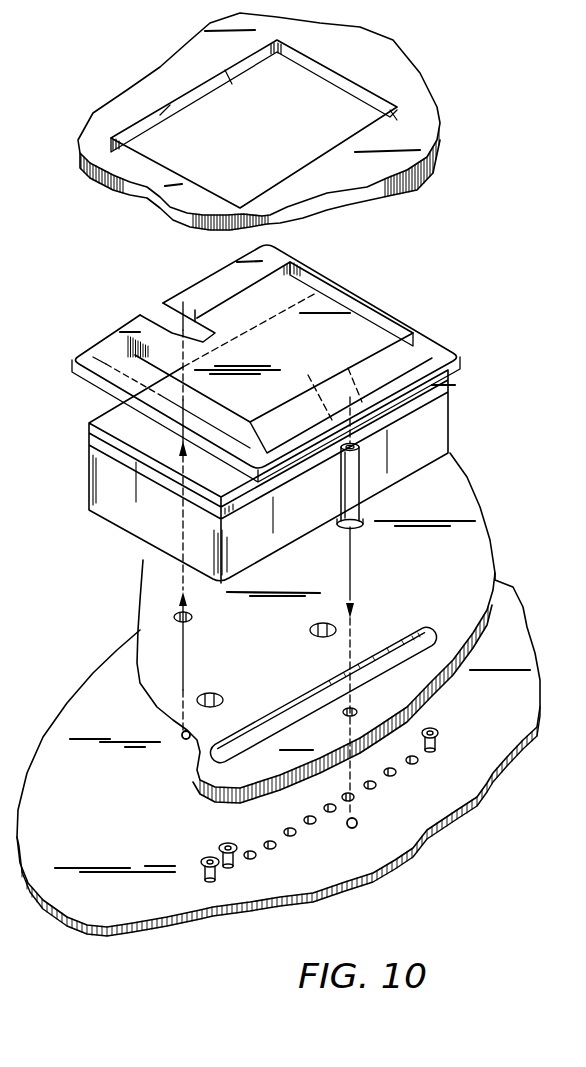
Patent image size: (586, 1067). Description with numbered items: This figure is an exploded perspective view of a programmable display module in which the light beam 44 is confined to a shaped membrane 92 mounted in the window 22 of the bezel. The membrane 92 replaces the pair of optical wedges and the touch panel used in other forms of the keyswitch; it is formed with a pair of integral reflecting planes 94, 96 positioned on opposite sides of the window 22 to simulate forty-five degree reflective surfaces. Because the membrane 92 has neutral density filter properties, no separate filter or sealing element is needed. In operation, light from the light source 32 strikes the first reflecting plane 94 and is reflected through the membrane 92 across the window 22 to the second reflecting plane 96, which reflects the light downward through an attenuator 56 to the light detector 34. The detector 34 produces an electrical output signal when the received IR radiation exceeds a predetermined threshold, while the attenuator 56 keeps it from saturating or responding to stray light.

The window 22 is at (338, 82).
The shaped membrane 92 is at (361, 300).
The reflecting plane 94 is at (148, 300).
The reflecting plane 96 is at (344, 393).
The light beam 44 is at (153, 545).
The attenuator 56 is at (338, 489).
The light source 32 is at (182, 735).
The light detector 34 is at (357, 820).